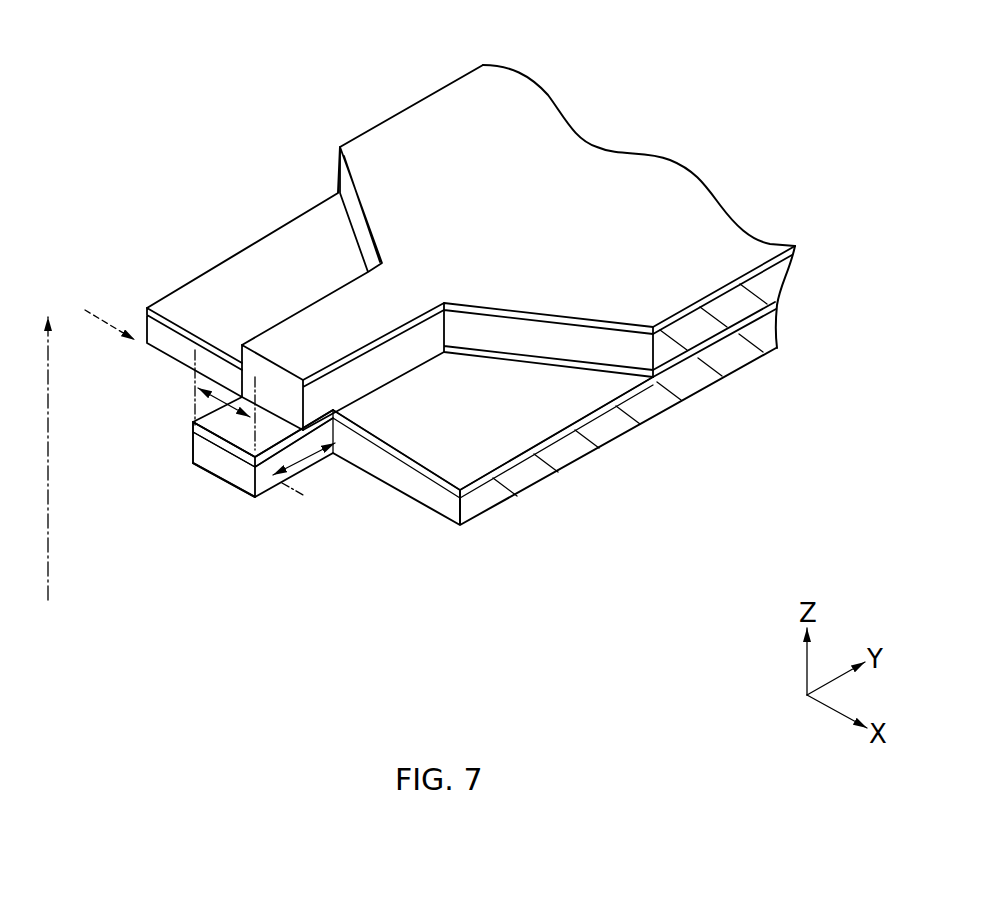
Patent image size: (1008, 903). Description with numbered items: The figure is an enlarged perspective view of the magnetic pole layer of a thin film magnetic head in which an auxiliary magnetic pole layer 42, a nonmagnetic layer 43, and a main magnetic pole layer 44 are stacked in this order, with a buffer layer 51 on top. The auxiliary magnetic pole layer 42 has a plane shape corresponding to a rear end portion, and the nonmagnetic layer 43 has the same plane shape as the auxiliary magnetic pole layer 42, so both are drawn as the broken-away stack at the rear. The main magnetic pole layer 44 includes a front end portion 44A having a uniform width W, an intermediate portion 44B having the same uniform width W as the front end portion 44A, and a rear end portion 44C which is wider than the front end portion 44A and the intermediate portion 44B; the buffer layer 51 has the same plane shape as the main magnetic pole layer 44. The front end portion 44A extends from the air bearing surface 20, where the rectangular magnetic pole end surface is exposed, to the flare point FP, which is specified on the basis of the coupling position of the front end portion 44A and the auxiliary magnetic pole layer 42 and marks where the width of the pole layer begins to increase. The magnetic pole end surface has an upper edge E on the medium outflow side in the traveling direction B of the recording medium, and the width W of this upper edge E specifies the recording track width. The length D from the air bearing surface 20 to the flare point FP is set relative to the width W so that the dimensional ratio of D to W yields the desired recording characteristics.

The buffer layer 51 is at (425, 117).
The nonmagnetic layer 43 is at (765, 317).
The auxiliary magnetic pole layer 42 is at (767, 337).
The main magnetic pole layer 44 is at (472, 635).
The front end portion 44A is at (243, 483).
The intermediate portion 44B is at (378, 367).
The rear end portion 44C is at (548, 343).
The air bearing surface 20 is at (222, 459).
The flare point FP is at (113, 318).
The traveling direction B is at (50, 452).
The width W is at (230, 412).
The upper edge E is at (228, 442).
The dimension D is at (316, 478).